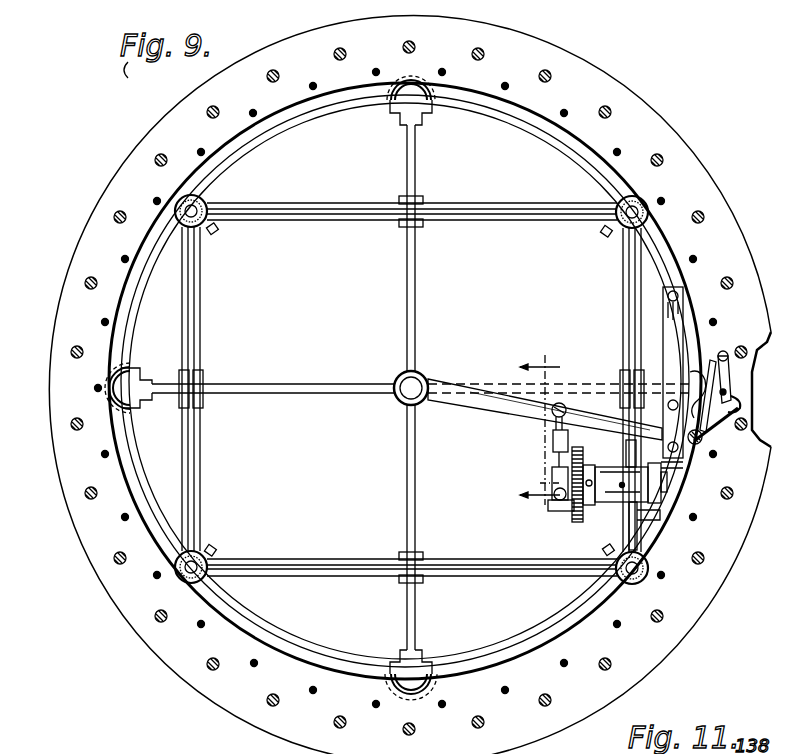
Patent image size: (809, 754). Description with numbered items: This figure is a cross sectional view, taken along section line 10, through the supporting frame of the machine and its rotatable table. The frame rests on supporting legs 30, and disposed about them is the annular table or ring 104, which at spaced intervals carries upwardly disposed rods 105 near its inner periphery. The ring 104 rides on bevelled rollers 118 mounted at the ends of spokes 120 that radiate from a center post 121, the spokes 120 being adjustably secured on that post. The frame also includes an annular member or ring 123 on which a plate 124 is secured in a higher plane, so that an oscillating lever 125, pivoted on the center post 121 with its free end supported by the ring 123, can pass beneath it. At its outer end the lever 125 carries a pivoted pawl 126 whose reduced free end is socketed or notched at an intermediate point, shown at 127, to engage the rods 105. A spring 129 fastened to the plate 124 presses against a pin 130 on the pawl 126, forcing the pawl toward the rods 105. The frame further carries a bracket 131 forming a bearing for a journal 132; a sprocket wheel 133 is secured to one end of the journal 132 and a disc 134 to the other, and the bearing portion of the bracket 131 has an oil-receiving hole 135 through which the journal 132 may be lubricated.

The ring 104 is at (96, 196).
The rods 105 is at (157, 200).
The annular member 123 is at (330, 656).
The bevelled rollers 118 is at (396, 102).
The spokes 120 is at (417, 276).
The supporting legs 30 is at (210, 207).
The center post 121 is at (404, 380).
The lever 125 is at (492, 415).
The plate 124 is at (662, 308).
The spring 129 is at (668, 380).
The notch 127 is at (732, 390).
The pawl 126 is at (742, 404).
The pin 130 is at (703, 434).
The section line 10 is at (541, 445).
The bracket 131 is at (620, 512).
The disc 134 is at (582, 470).
The oil-receiving hole 135 is at (622, 487).
The sprocket wheel 133 is at (637, 506).
The journal 132 is at (662, 516).